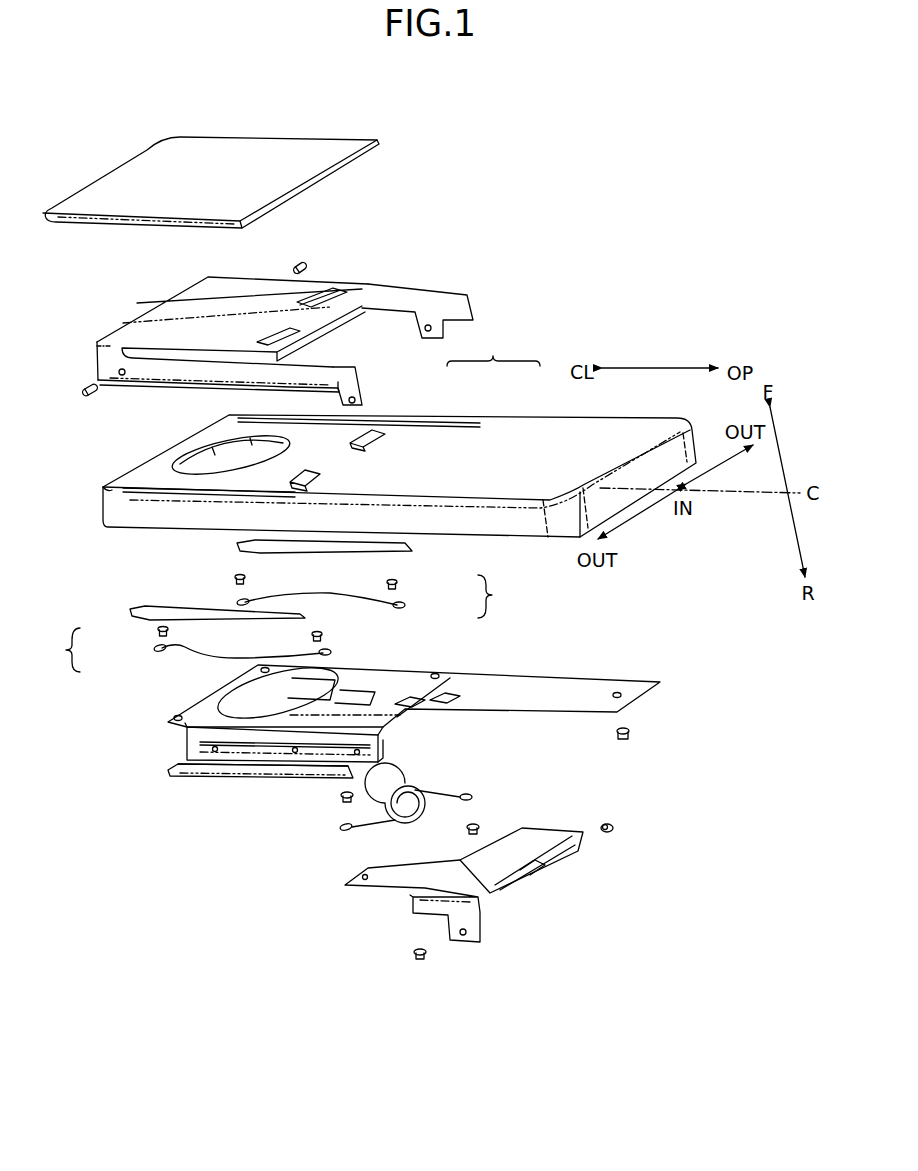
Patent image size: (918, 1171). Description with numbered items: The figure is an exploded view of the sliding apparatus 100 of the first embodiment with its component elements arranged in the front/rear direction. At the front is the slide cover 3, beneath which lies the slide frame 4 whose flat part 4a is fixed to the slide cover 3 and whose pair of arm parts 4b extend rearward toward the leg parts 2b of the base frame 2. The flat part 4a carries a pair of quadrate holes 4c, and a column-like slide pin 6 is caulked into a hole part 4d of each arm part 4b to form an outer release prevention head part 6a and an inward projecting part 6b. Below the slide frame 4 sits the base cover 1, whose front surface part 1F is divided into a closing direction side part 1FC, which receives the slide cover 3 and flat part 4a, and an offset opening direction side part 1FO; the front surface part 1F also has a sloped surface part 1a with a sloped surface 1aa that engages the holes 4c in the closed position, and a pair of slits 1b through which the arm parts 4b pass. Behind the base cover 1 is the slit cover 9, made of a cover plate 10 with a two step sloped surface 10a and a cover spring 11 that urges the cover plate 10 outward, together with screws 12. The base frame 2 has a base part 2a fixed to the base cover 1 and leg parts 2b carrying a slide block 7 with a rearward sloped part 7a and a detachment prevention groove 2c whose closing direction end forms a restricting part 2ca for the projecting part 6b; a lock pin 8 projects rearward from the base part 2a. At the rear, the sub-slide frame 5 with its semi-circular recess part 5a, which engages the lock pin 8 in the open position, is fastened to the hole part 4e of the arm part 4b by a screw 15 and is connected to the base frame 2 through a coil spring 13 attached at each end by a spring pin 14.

The sliding apparatus 100 is at (447, 145).
The base cover 1 is at (374, 433).
The sloped surface part 1a is at (382, 442).
The sloped surface 1aa is at (300, 465).
The slits 1b is at (229, 417).
The front surface part 1F is at (480, 378).
The closing direction side part 1FC is at (433, 412).
The opening direction side part 1FO is at (553, 427).
The base frame 2 is at (376, 708).
The base part 2a is at (382, 688).
The leg parts 2b is at (190, 735).
The detachment prevention groove 2c is at (355, 772).
The restricting part 2ca is at (193, 746).
The slide cover 3 is at (241, 135).
The slide frame 4 is at (292, 322).
The flat part 4a is at (232, 290).
The arm parts 4b is at (412, 300).
The quadrate holes 4c is at (348, 292).
The hole part 4d is at (122, 368).
The hole part 4e is at (428, 332).
The sub-slide frame 5 is at (466, 863).
The recess part 5a is at (530, 868).
The slide pin 6 is at (198, 333).
The release prevention head part 6a is at (88, 396).
The projecting part 6b is at (100, 398).
The slide block 7 is at (230, 782).
The sloped part 7a is at (187, 765).
The lock pin 8 is at (630, 736).
The slit cover 9 is at (280, 607).
The cover plate 10 is at (282, 594).
The two step sloped surface 10a is at (412, 550).
The cover spring 11 is at (160, 649).
The screw 12 is at (234, 580).
The spring 13 is at (448, 793).
The spring pin 14 is at (340, 799).
The screw 15 is at (615, 828).